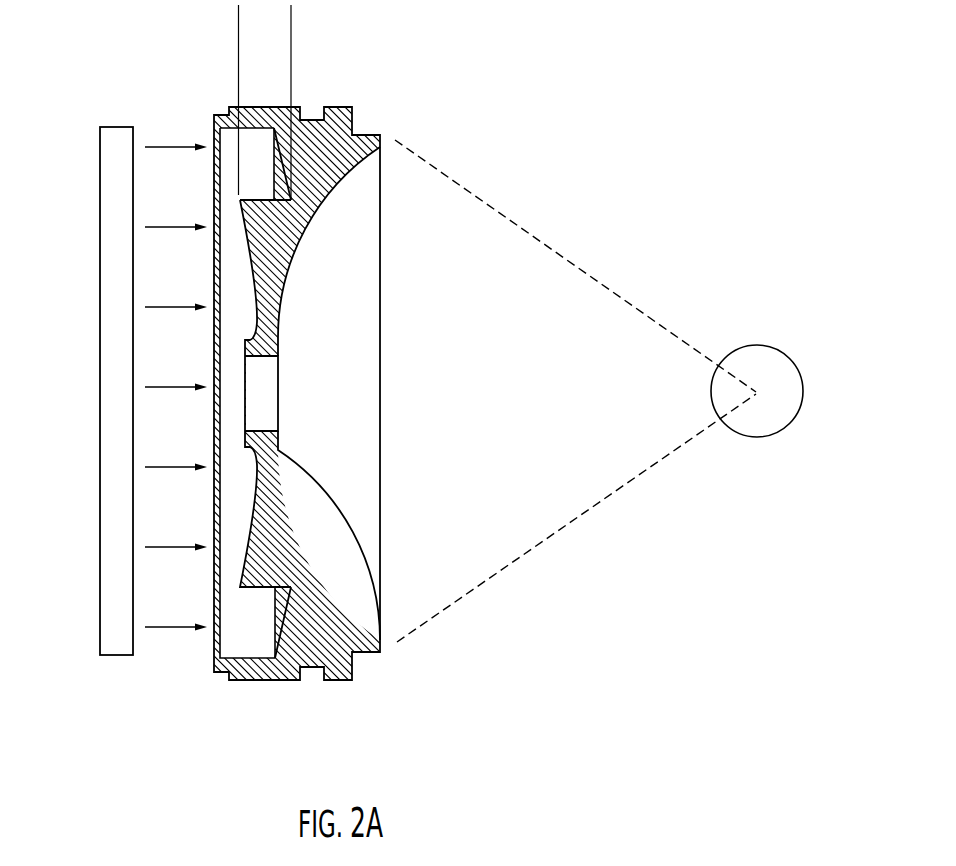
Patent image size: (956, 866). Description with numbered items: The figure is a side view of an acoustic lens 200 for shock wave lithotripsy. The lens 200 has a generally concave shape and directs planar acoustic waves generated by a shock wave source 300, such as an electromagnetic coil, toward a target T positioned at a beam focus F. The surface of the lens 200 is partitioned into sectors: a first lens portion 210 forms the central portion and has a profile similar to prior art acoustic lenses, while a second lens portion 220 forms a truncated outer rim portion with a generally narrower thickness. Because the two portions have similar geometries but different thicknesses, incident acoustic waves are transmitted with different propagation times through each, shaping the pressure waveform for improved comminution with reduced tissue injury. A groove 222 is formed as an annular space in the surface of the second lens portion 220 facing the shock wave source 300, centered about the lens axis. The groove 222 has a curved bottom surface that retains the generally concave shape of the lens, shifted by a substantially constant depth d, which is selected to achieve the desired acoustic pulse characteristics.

The acoustic lens 200 is at (461, 320).
The first lens portion 210 is at (275, 525).
The second lens portion 220 is at (313, 642).
The groove 222 is at (252, 626).
The shock wave source 300 is at (118, 127).
The depth d is at (289, 38).
The target T is at (752, 345).
The beam focus F is at (756, 392).